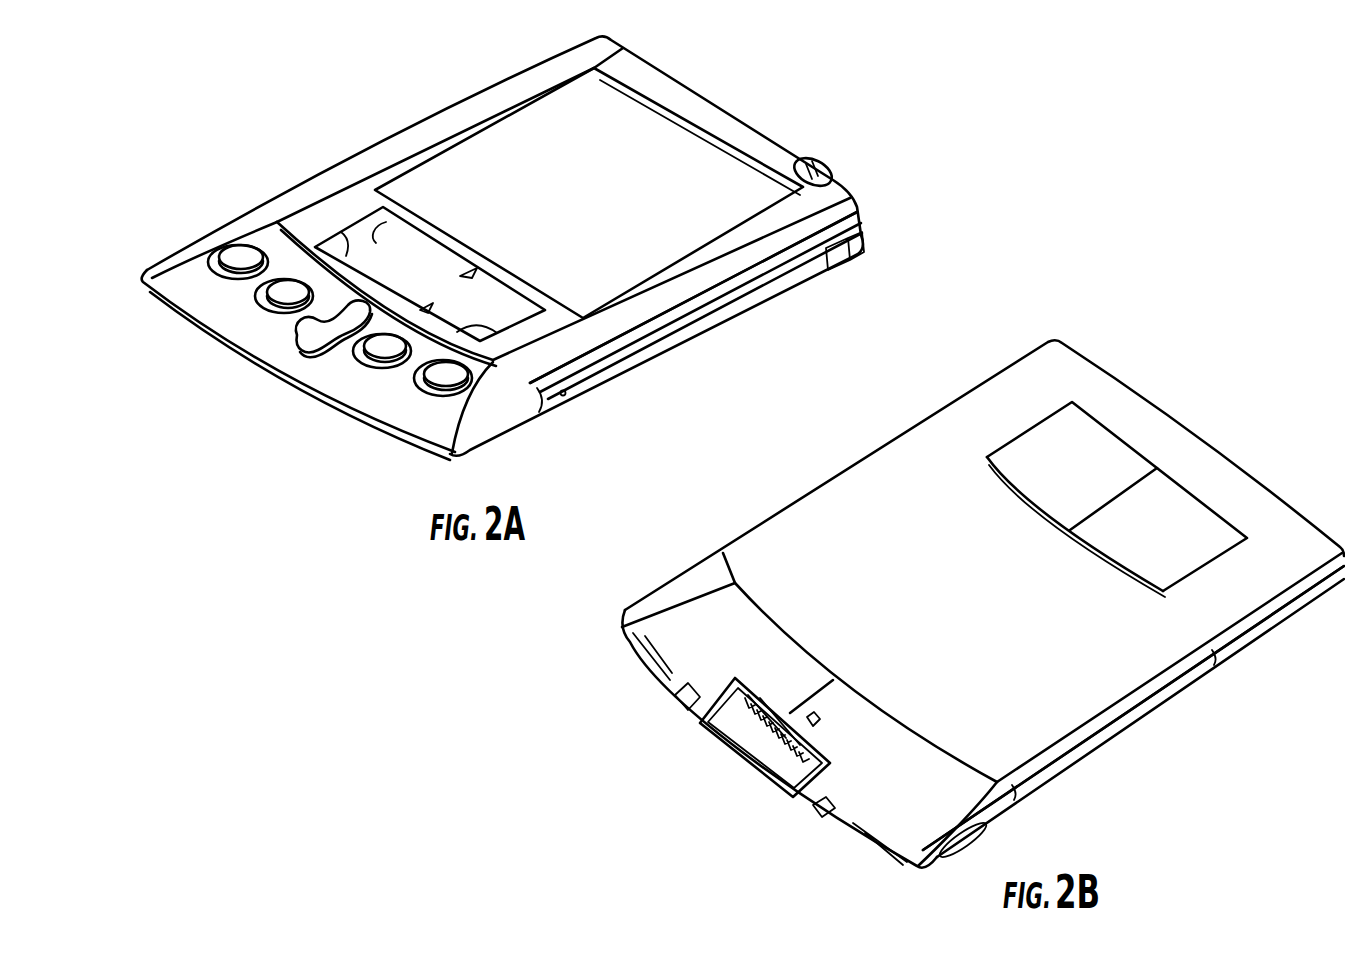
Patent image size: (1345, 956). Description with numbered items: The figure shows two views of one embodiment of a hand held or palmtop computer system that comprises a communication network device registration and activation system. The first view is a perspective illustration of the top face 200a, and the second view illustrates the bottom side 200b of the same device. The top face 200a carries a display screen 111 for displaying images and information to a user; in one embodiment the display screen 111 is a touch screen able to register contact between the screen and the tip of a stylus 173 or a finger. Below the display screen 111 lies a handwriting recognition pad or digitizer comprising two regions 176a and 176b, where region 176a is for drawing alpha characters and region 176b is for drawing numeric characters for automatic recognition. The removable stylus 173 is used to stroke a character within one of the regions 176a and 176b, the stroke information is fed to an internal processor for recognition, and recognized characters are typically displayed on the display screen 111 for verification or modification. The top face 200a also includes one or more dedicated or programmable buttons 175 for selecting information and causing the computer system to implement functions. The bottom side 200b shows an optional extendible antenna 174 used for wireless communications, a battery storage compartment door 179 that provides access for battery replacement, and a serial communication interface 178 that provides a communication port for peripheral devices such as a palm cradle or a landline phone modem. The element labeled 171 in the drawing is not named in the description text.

In FIG. 2A, the top face 200a is at (364, 83).
In FIG. 2B, the bottom side 200b is at (1158, 312).
In FIG. 2A, the display screen 111 is at (597, 209).
In FIG. 2A, the stylus 171 is at (820, 160).
In FIG. 2A, the stylus 173 is at (707, 311).
In FIG. 2B, the extendible antenna 174 is at (1103, 732).
In FIG. 2A, the buttons 175 is at (288, 288).
In FIG. 2A, the region 176a is at (386, 222).
In FIG. 2A, the region 176b is at (486, 313).
In FIG. 2B, the serial communication interface 178 is at (733, 763).
In FIG. 2B, the battery storage compartment door 179 is at (1088, 481).